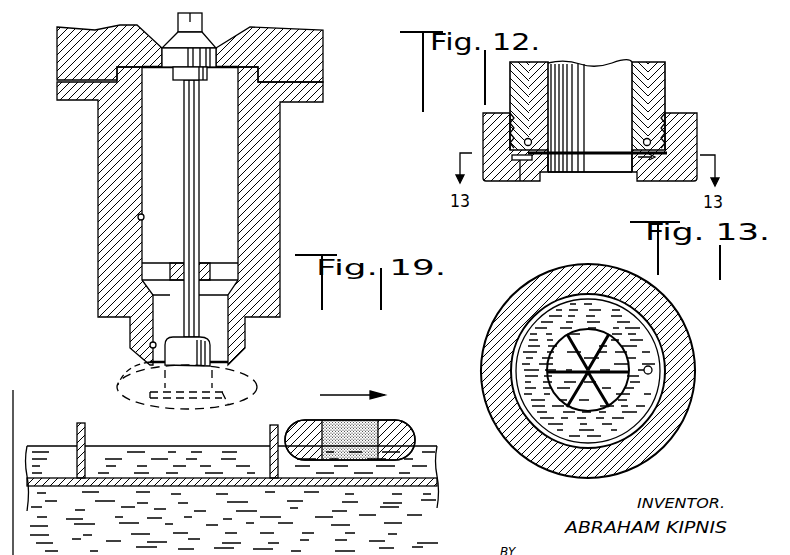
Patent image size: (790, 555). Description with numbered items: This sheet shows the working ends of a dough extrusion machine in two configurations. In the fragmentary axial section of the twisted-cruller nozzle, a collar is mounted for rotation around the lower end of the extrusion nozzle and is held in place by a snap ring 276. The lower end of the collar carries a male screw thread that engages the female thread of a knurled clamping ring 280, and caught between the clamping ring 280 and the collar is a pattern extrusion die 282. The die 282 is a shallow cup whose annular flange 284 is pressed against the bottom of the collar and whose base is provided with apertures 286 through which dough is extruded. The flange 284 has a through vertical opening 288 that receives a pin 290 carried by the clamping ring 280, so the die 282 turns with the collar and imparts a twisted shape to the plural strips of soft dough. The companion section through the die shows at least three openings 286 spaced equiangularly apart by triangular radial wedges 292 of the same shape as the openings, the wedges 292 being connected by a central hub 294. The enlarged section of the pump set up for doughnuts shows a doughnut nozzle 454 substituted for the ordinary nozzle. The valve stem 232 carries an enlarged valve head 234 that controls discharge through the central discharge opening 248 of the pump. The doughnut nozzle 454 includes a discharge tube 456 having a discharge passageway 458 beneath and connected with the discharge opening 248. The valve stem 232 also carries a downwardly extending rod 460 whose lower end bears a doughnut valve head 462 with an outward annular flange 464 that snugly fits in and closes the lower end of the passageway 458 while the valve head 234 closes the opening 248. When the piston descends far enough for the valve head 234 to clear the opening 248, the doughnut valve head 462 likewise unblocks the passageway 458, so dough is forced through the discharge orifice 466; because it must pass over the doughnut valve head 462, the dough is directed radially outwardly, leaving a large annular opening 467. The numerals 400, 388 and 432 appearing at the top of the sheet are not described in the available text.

In FIG. 19, the valve stem 232 is at (178, 14).
In FIG. 19, the valve head 234 is at (213, 48).
In FIG. 19, the discharge opening 248 is at (210, 76).
In FIG. 19, the assembly 400 is at (378, 12).
In FIG. 12, the member 388 is at (465, 12).
In FIG. 12, the member 432 is at (542, 12).
In FIG. 19, the doughnut nozzle 454 is at (280, 178).
In FIG. 19, the discharge tube 456 is at (110, 181).
In FIG. 19, the discharge passageway 458 is at (138, 216).
In FIG. 19, the rod 460 is at (192, 230).
In FIG. 19, the doughnut valve head 462 is at (215, 345).
In FIG. 19, the annular flange 464 is at (222, 370).
In FIG. 19, the discharge orifice 466 is at (142, 362).
In FIG. 19, the annular opening 467 is at (405, 431).
In FIG. 12, the snap ring 276 is at (650, 138).
In FIG. 12, the clamping ring 280 is at (690, 141).
In FIG. 13, the clamping ring 280 is at (494, 330).
In FIG. 12, the pattern extrusion die 282 is at (596, 166).
In FIG. 12, the annular flange 284 is at (527, 183).
In FIG. 12, the apertures 286 is at (567, 175).
In FIG. 13, the apertures 286 is at (588, 338).
In FIG. 13, the vertical opening 288 is at (653, 368).
In FIG. 12, the pin 290 is at (644, 178).
In FIG. 13, the triangular radial wedges 292 is at (617, 361).
In FIG. 13, the central hub 294 is at (583, 378).